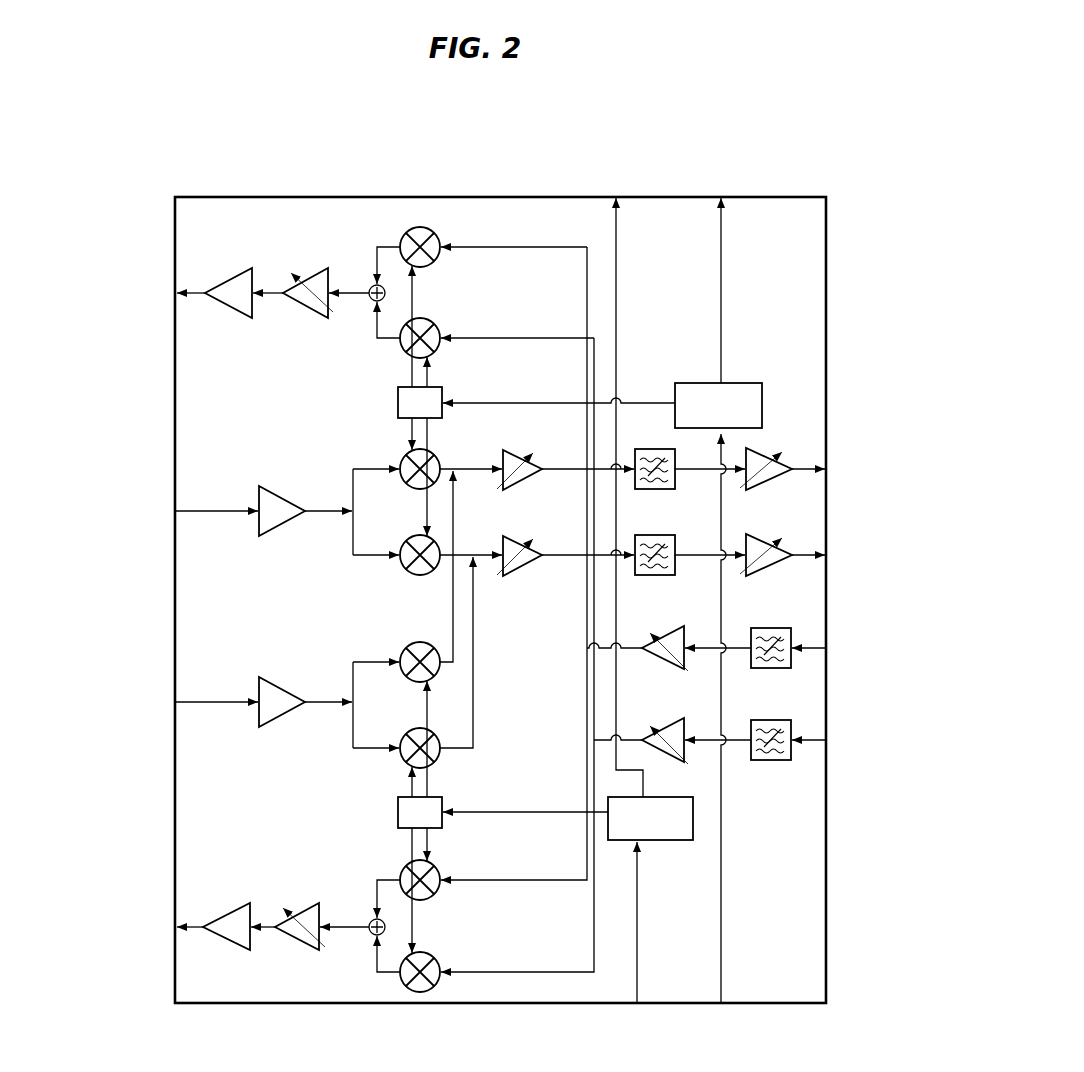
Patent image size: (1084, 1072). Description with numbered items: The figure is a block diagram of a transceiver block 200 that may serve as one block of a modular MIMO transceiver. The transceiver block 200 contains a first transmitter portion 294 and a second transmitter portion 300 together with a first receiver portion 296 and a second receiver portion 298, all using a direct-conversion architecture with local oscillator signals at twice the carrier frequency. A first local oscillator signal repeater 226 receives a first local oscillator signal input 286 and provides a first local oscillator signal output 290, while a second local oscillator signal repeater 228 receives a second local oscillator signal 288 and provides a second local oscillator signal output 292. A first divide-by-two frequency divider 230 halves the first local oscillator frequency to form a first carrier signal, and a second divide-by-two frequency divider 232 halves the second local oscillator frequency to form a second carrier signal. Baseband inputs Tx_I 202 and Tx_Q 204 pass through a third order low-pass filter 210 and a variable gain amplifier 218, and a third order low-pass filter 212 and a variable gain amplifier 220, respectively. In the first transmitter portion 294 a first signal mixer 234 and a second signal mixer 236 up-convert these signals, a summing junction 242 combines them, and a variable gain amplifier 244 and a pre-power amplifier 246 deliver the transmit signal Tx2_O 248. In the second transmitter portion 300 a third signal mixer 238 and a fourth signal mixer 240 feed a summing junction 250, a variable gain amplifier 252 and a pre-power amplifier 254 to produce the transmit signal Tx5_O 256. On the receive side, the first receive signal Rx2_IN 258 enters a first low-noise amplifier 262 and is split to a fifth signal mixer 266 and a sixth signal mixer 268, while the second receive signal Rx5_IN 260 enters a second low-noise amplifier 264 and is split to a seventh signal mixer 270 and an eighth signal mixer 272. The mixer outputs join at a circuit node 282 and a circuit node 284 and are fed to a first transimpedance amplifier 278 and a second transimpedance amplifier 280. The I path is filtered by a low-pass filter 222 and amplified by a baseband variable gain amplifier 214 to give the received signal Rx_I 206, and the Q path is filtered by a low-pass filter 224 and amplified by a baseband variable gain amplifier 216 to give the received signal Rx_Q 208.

The transceiver block 200 is at (495, 195).
The Tx_I baseband signal 202 is at (807, 643).
The Tx_Q baseband signal 204 is at (807, 735).
The received signal Rx_I 206 is at (807, 466).
The received signal Rx_Q 208 is at (807, 552).
The third order low-pass filter 210 is at (793, 660).
The third order low-pass filter 212 is at (793, 752).
The baseband variable gain amplifier 214 is at (758, 489).
The baseband variable gain amplifier 216 is at (758, 575).
The variable gain amplifier 218 is at (661, 661).
The variable gain amplifier 220 is at (661, 753).
The low-pass filter 222 is at (676, 479).
The low-pass filter 224 is at (676, 565).
The first local oscillator signal repeater 226 is at (742, 382).
The second local oscillator signal repeater 228 is at (670, 841).
The first divide-by-two frequency divider 230 is at (397, 813).
The second divide-by-two frequency divider 232 is at (443, 389).
The first signal mixer 234 is at (428, 955).
The second signal mixer 236 is at (423, 899).
The third signal mixer 238 is at (428, 319).
The fourth signal mixer 240 is at (425, 228).
The summing junction 242 is at (370, 932).
The variable gain amplifier 244 is at (300, 905).
The pre-power amplifier 246 is at (225, 905).
The transmit signal Tx2_O 248 is at (205, 931).
The summing junction 250 is at (370, 301).
The variable gain amplifier 252 is at (312, 280).
The pre-power amplifier 254 is at (228, 281).
The transmit signal Tx5_O 256 is at (237, 313).
The first receive signal Rx2_IN 258 is at (212, 705).
The second receive signal Rx5_IN 260 is at (212, 513).
The first low-noise amplifier 262 is at (288, 692).
The second low-noise amplifier 264 is at (288, 498).
The fifth signal mixer 266 is at (420, 640).
The sixth signal mixer 268 is at (420, 726).
The seventh signal mixer 270 is at (404, 454).
The eighth signal mixer 272 is at (420, 575).
The first transimpedance amplifier 278 is at (505, 452).
The second transimpedance amplifier 280 is at (518, 536).
The circuit node 282 is at (454, 463).
The circuit node 284 is at (473, 553).
The first local oscillator signal input 286 is at (722, 982).
The second local oscillator signal 288 is at (637, 982).
The first local oscillator signal output 290 is at (721, 225).
The second local oscillator signal output 292 is at (616, 225).
The first transmitter portion 294 is at (835, 940).
The first receiver portion 296 is at (166, 657).
The second receiver portion 298 is at (166, 465).
The second transmitter portion 300 is at (835, 297).